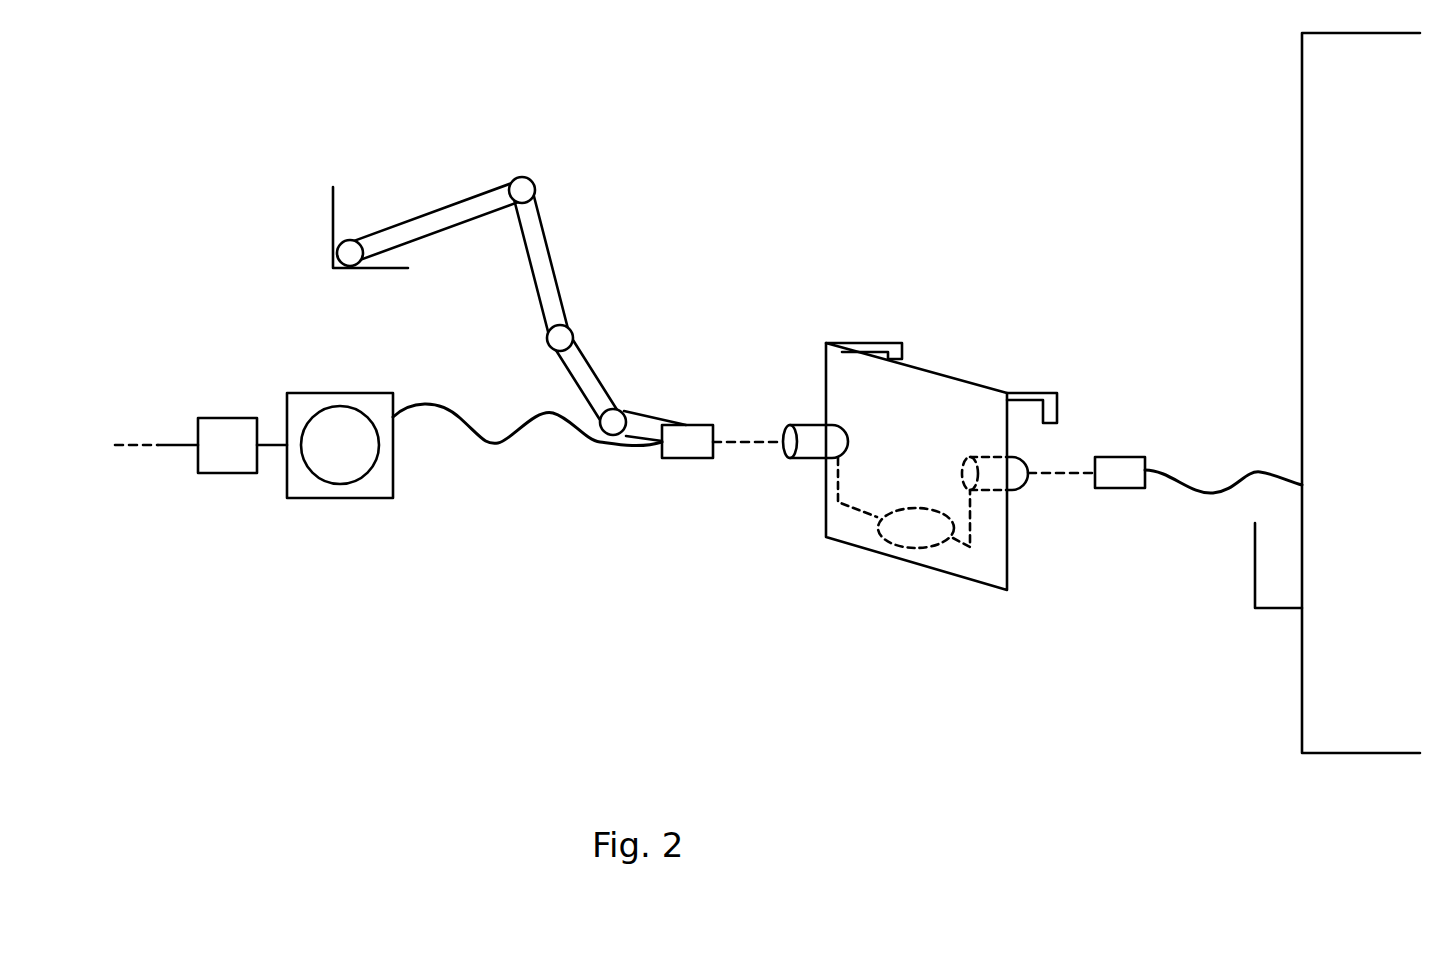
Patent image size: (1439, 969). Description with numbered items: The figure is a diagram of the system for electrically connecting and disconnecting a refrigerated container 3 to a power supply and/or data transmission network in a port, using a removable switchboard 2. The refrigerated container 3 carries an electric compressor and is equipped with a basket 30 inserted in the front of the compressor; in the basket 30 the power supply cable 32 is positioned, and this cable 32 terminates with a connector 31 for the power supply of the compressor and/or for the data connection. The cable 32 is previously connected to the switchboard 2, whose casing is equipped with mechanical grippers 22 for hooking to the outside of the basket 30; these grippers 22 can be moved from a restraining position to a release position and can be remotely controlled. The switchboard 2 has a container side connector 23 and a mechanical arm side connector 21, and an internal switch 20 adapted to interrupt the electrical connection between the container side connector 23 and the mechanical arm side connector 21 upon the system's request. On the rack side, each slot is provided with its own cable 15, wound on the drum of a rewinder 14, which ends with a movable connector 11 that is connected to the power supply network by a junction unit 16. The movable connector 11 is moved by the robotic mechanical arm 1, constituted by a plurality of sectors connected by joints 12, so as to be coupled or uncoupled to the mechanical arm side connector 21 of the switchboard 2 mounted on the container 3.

The robotic mechanical arm 1 is at (457, 203).
The joints 12 is at (352, 239).
The movable connector 11 is at (685, 458).
The rewinder 14 is at (347, 498).
The cable 15 is at (495, 445).
The junction unit 16 is at (228, 473).
The switchboard 2 is at (826, 365).
The internal switch 20 is at (913, 547).
The mechanical arm side connector 21 is at (810, 458).
The mechanical grippers 22 is at (870, 342).
The container side connector 23 is at (1020, 452).
The refrigerated container 3 is at (1302, 82).
The basket 30 is at (1252, 587).
The connector 31 is at (1127, 489).
The power supply cable 32 is at (1242, 473).